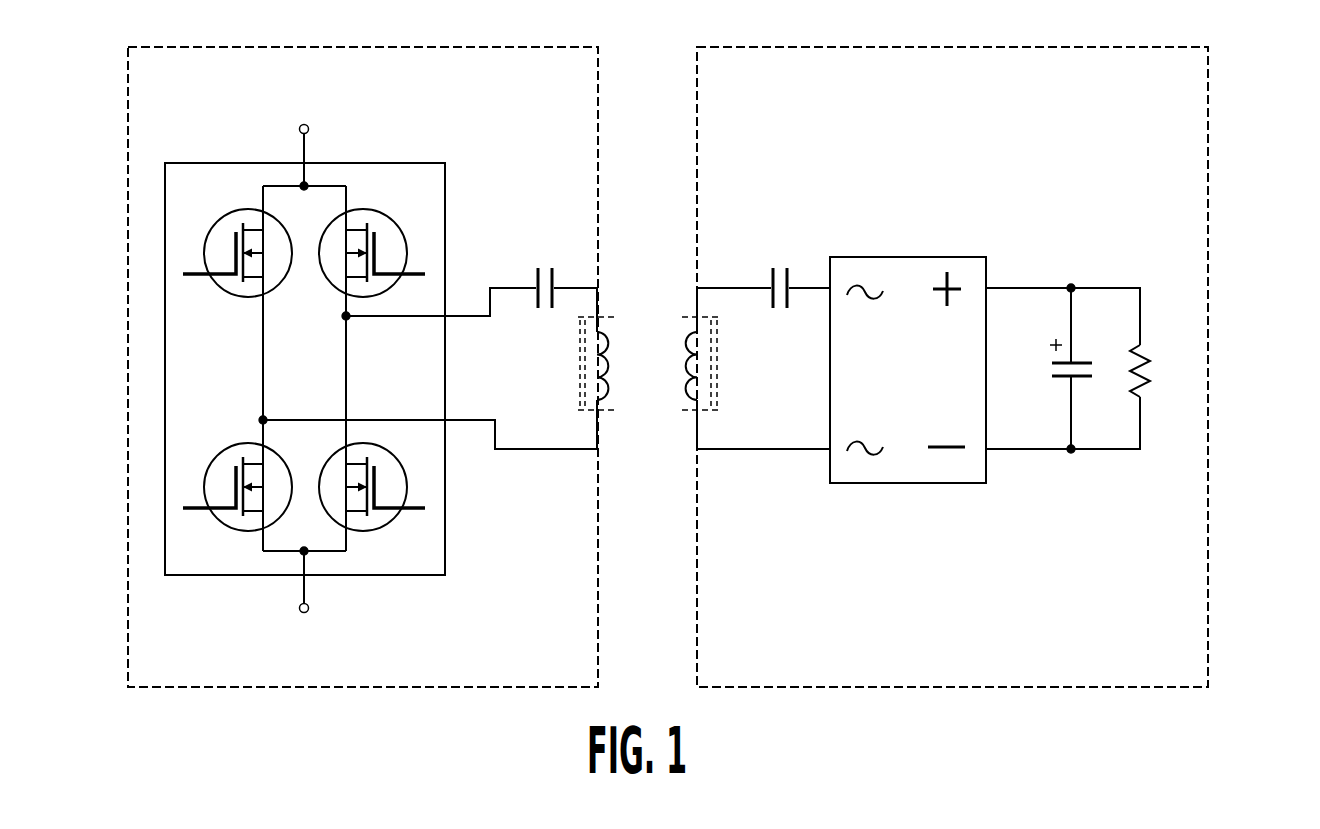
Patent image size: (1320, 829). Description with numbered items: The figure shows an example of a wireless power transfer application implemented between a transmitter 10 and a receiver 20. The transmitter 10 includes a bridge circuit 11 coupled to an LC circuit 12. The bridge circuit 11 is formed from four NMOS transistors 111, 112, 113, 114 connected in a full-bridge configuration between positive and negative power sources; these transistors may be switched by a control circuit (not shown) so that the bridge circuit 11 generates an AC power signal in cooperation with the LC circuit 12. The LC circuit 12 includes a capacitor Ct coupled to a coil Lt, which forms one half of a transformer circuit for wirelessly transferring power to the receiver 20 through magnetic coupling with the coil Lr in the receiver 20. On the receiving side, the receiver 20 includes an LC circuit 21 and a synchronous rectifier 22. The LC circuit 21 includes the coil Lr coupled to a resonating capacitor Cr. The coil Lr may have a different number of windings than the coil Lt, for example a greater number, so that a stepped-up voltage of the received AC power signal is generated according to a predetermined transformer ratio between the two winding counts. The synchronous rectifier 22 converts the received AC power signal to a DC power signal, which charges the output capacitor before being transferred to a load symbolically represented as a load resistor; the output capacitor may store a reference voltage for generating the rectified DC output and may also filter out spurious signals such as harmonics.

The transmitter 10 is at (128, 158).
The bridge circuit 11 is at (445, 212).
The NMOS transistor 111 is at (210, 231).
The NMOS transistor 112 is at (367, 210).
The NMOS transistor 113 is at (210, 455).
The NMOS transistor 114 is at (368, 530).
The LC circuit 12 is at (517, 381).
The receiver 20 is at (1208, 180).
The LC circuit 21 is at (803, 384).
The synchronous rectifier 22 is at (930, 257).